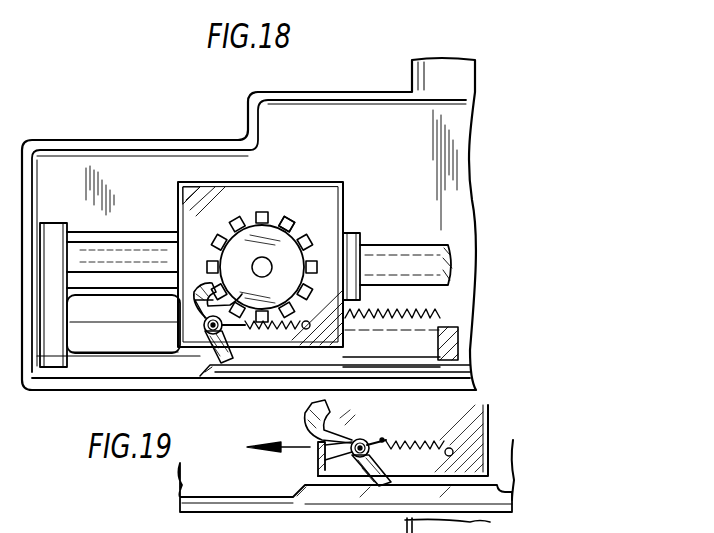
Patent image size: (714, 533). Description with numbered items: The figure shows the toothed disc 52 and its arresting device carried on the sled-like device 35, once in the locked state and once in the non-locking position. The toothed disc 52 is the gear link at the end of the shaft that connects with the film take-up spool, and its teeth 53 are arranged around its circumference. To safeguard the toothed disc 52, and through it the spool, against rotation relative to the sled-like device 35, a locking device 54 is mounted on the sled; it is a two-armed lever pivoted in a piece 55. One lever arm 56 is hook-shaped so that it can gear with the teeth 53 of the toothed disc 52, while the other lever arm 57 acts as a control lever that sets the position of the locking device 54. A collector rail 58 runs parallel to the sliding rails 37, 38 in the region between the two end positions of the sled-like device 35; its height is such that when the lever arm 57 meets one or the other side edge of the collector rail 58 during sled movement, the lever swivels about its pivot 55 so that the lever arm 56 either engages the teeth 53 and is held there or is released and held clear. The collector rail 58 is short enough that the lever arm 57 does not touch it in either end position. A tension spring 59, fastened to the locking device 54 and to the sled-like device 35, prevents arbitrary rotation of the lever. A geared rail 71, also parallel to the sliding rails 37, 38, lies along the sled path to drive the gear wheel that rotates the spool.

In FIG. 18, the sled-like device 35 is at (188, 208).
In FIG. 19, the sled-like device 35 is at (478, 430).
In FIG. 18, the sliding rail 37 is at (448, 350).
In FIG. 18, the sliding rail 38 is at (440, 262).
In FIG. 18, the toothed disc 52 is at (305, 257).
In FIG. 18, the teeth 53 is at (288, 212).
In FIG. 18, the locking device 54 is at (186, 317).
In FIG. 19, the locking device 54 is at (332, 461).
In FIG. 18, the pivot piece 55 is at (195, 353).
In FIG. 19, the pivot piece 55 is at (367, 440).
In FIG. 18, the lever arm 56 is at (183, 262).
In FIG. 18, the lever arm 57 is at (220, 362).
In FIG. 19, the lever arm 57 is at (388, 482).
In FIG. 18, the collector rail 58 is at (303, 375).
In FIG. 19, the collector rail 58 is at (332, 497).
In FIG. 18, the tension spring 59 is at (340, 333).
In FIG. 19, the tension spring 59 is at (415, 448).
In FIG. 18, the geared rail 71 is at (428, 332).